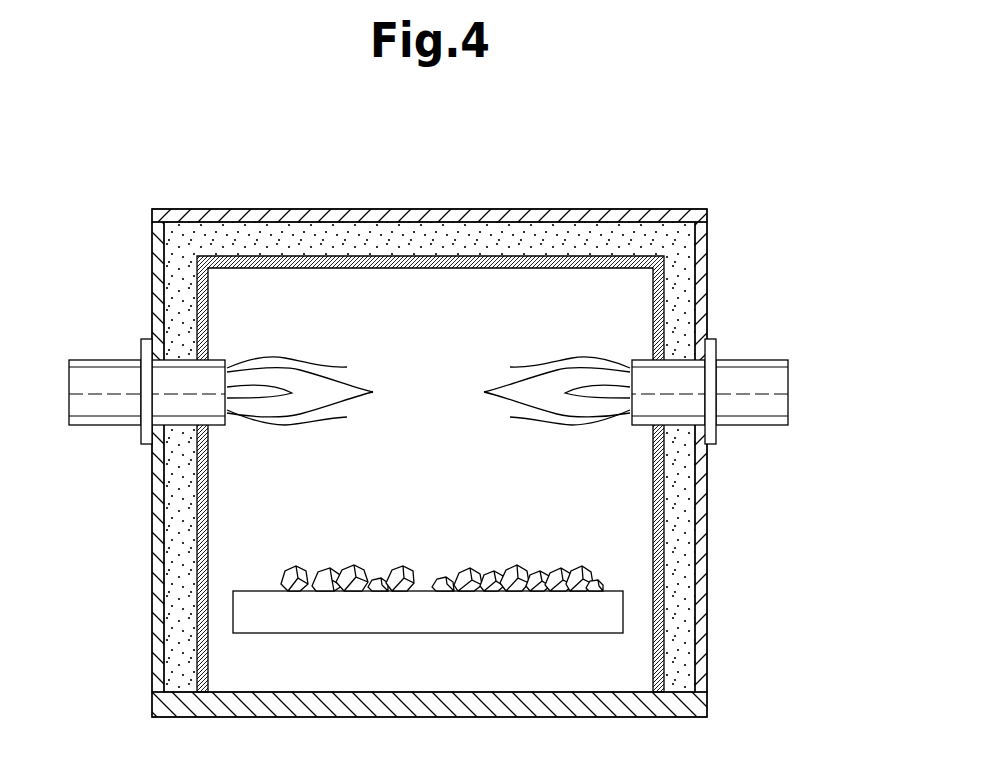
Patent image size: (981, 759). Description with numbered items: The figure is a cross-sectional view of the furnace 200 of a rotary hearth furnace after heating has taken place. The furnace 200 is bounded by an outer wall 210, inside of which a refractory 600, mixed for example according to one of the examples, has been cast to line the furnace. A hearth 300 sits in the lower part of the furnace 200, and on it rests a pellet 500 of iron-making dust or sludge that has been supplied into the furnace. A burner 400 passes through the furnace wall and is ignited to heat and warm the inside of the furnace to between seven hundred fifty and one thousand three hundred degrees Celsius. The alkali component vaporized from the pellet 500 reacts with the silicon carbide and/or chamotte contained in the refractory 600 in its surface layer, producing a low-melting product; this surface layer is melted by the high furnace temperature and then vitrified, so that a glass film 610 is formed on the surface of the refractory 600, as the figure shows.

The furnace 200 is at (747, 124).
The outer wall 210 is at (622, 212).
The refractory 600 is at (677, 240).
The glass film 610 is at (565, 268).
The burner 400 is at (93, 370).
The hearth 300 is at (268, 605).
The pellet 500 is at (397, 567).